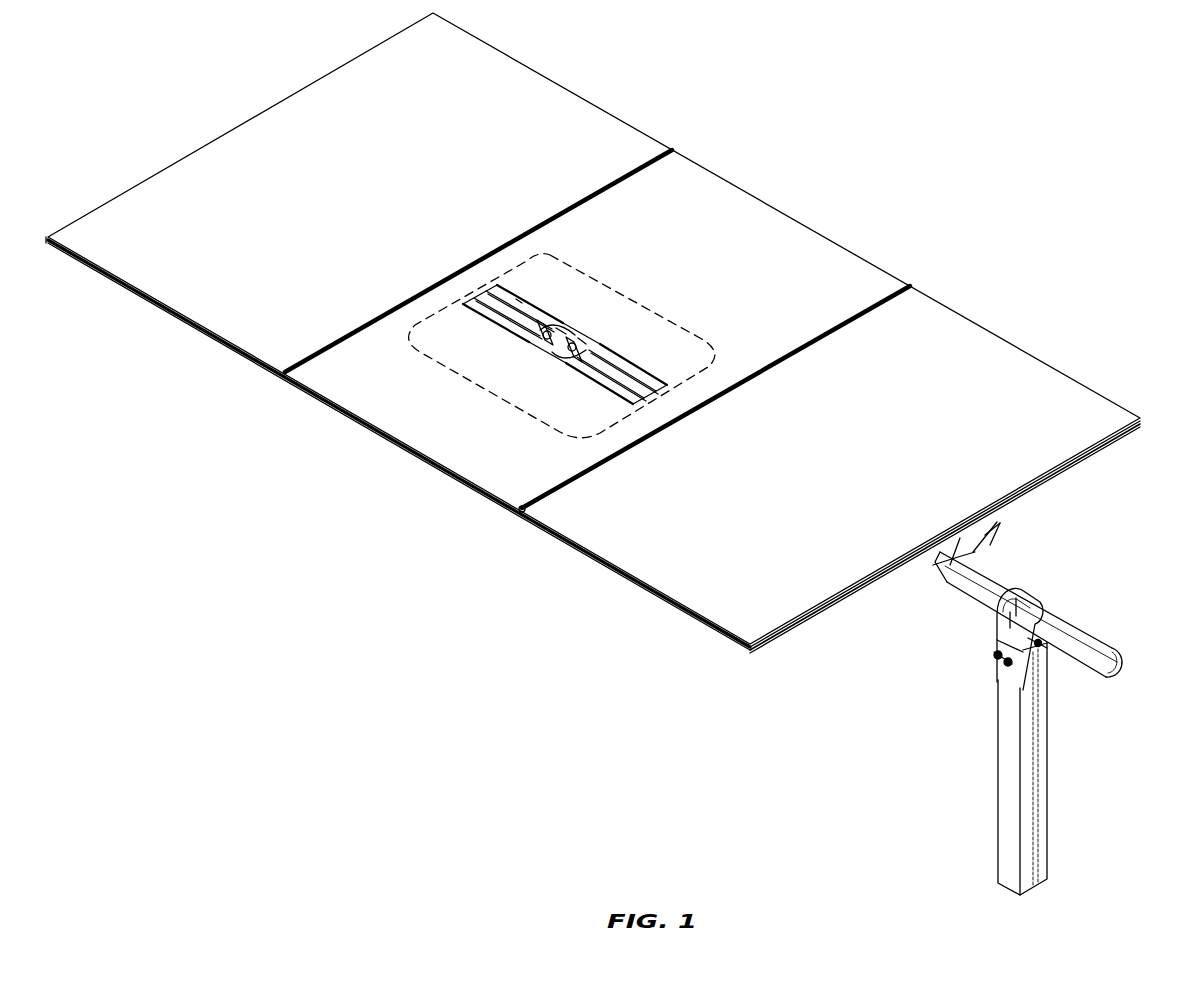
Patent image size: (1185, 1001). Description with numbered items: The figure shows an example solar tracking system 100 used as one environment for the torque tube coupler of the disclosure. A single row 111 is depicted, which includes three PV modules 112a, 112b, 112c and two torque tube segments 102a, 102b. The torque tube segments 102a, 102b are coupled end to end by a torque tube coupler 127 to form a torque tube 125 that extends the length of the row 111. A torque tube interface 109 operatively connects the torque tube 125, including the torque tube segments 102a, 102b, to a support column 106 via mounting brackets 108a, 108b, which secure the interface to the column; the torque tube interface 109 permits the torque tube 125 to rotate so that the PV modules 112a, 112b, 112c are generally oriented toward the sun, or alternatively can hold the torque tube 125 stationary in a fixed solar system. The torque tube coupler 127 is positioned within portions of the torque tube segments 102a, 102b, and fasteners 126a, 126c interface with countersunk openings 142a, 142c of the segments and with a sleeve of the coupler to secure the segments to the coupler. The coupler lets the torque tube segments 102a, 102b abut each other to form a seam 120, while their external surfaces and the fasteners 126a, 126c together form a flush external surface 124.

The solar tracking system 100 is at (1075, 56).
The row 111 is at (224, 104).
The PV module 112a is at (1108, 413).
The PV module 112b is at (855, 272).
The PV module 112c is at (565, 100).
The torque tube segment 102a is at (612, 400).
The torque tube segment 102b is at (470, 305).
The support column 106 is at (1040, 732).
The mounting bracket 108a is at (993, 670).
The mounting bracket 108b is at (1050, 662).
The torque tube interface 109 is at (1008, 590).
The seam 120 is at (560, 395).
The flush external surface 124 is at (657, 370).
The torque tube 125 is at (518, 303).
The fastener 126a is at (582, 341).
The fastener 126c is at (562, 333).
The torque tube coupler 127 is at (522, 512).
The countersunk opening 142a is at (556, 352).
The countersunk opening 142c is at (540, 336).